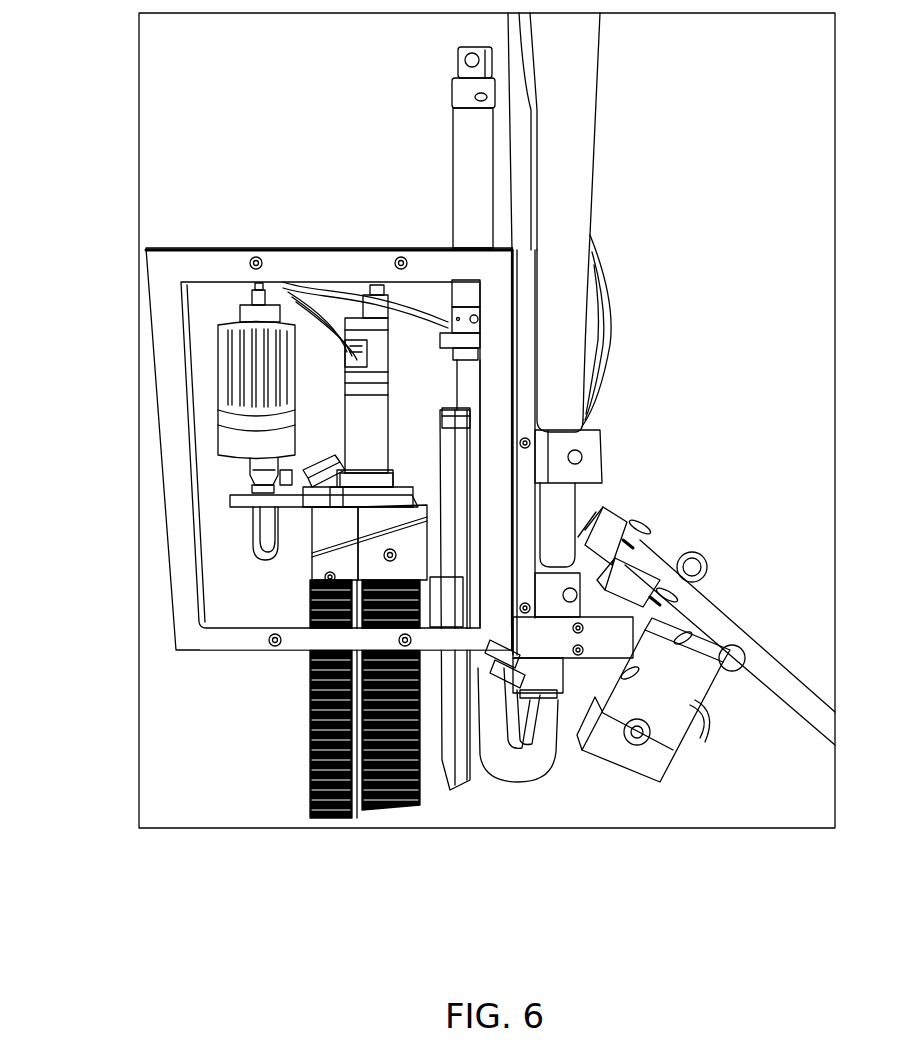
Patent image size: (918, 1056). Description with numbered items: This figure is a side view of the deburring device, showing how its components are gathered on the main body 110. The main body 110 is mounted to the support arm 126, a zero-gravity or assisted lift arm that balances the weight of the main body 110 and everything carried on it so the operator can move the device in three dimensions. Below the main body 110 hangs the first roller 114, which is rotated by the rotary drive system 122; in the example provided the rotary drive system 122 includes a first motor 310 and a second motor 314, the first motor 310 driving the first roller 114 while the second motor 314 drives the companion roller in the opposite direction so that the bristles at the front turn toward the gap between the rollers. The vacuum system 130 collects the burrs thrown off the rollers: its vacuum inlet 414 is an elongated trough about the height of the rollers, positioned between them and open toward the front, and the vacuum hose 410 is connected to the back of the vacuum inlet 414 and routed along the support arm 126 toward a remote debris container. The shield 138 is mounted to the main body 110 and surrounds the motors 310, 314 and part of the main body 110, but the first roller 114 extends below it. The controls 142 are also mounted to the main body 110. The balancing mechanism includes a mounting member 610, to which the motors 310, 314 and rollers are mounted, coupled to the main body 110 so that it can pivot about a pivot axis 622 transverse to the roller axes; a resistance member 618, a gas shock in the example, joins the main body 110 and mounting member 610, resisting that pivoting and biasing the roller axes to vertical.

The main body 110 is at (357, 566).
The first roller 114 is at (355, 790).
The rotary drive system 122 is at (353, 300).
The support arm 126 is at (587, 137).
The vacuum system 130 is at (528, 790).
The shield 138 is at (146, 248).
The controls 142 is at (672, 515).
The first motor 310 is at (330, 330).
The second motor 314 is at (413, 387).
The vacuum hose 410 is at (543, 755).
The vacuum inlet 414 is at (455, 778).
The mounting member 610 is at (332, 526).
The resistance member 618 is at (462, 133).
The pivot axis 622 is at (388, 565).